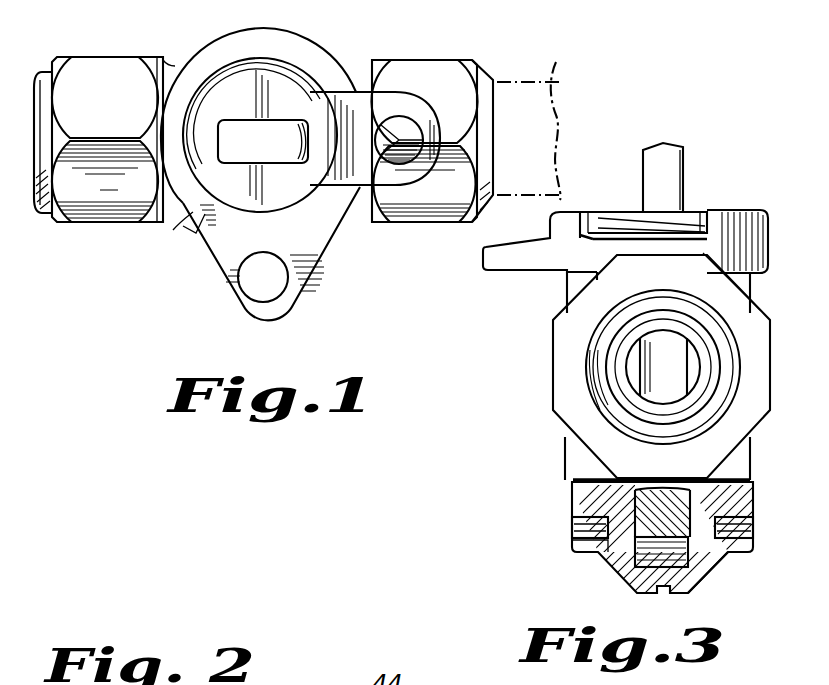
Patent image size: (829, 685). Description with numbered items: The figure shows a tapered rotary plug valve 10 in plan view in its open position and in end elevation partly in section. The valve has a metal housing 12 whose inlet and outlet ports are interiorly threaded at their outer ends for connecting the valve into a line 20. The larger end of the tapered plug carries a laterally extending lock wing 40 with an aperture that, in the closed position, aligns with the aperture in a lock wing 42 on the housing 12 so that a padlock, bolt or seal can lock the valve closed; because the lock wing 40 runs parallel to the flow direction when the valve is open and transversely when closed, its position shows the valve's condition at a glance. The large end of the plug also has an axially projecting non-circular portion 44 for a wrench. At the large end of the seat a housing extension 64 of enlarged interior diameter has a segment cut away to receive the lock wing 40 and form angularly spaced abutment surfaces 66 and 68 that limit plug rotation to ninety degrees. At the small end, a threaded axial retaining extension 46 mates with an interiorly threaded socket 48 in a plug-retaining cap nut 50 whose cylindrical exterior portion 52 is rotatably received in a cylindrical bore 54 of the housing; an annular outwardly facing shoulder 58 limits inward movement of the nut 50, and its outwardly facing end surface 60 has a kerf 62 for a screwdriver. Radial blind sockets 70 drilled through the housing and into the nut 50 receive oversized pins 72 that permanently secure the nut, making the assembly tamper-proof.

In FIG. 1, the tapered rotary plug valve 10 is at (372, 52).
In FIG. 3, the tapered rotary plug valve 10 is at (748, 190).
In FIG. 1, the metal housing 12 is at (360, 213).
In FIG. 3, the metal housing 12 is at (757, 280).
In FIG. 1, the line 20 is at (31, 218).
In FIG. 1, the lock wing 40 is at (362, 62).
In FIG. 3, the lock wing 40 is at (631, 222).
In FIG. 1, the lock wing 42 is at (320, 267).
In FIG. 3, the lock wing 42 is at (512, 262).
In FIG. 1, the non-circular portion 44 is at (257, 128).
In FIG. 3, the non-circular portion 44 is at (667, 160).
In FIG. 3, the axial retaining extension 46 is at (747, 473).
In FIG. 3, the interiorly threaded socket 48 is at (625, 568).
In FIG. 3, the plug-retaining cap nut 50 is at (705, 575).
In FIG. 3, the cylindrical exterior portion 52 is at (735, 555).
In FIG. 3, the cylindrical bore 54 is at (600, 552).
In FIG. 3, the annular outwardly facing shoulder 58 is at (582, 505).
In FIG. 3, the outwardly facing end surface 60 is at (655, 593).
In FIG. 3, the kerf 62 is at (665, 593).
In FIG. 1, the housing extension 64 is at (166, 239).
In FIG. 3, the housing extension 64 is at (767, 222).
In FIG. 1, the abutment surface 66 is at (200, 255).
In FIG. 3, the abutment surface 66 is at (589, 220).
In FIG. 1, the abutment surface 68 is at (387, 100).
In FIG. 3, the abutment surface 68 is at (703, 212).
In FIG. 3, the blind socket 70 is at (592, 546).
In FIG. 3, the pin 72 is at (578, 527).